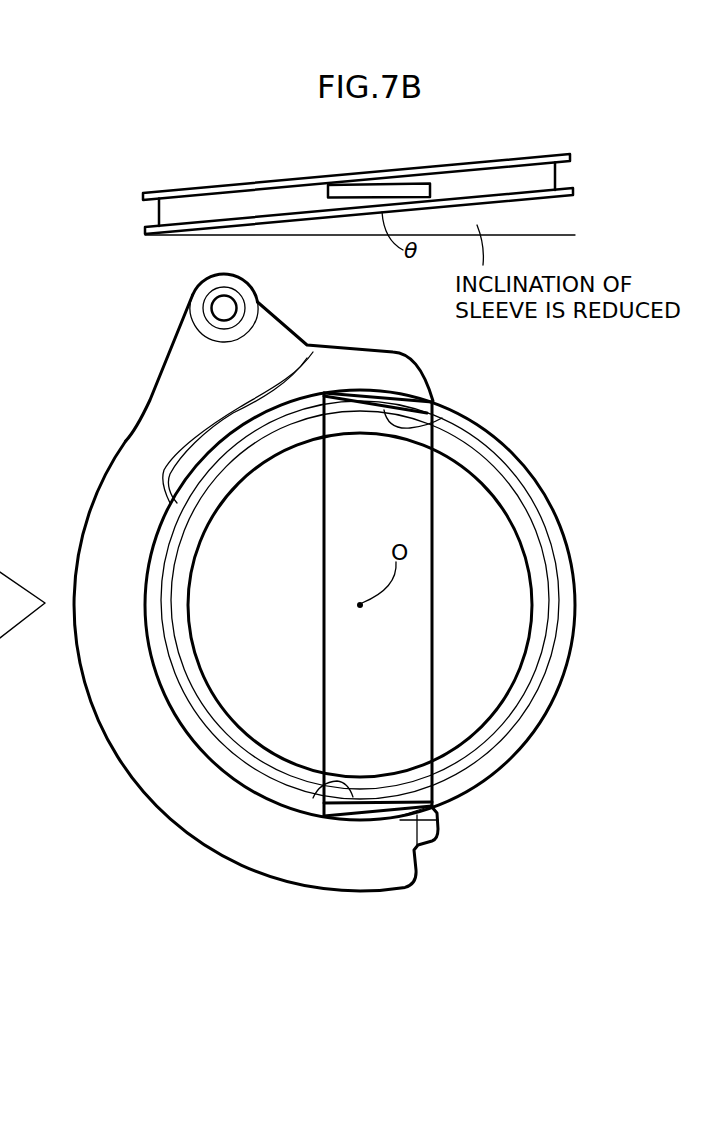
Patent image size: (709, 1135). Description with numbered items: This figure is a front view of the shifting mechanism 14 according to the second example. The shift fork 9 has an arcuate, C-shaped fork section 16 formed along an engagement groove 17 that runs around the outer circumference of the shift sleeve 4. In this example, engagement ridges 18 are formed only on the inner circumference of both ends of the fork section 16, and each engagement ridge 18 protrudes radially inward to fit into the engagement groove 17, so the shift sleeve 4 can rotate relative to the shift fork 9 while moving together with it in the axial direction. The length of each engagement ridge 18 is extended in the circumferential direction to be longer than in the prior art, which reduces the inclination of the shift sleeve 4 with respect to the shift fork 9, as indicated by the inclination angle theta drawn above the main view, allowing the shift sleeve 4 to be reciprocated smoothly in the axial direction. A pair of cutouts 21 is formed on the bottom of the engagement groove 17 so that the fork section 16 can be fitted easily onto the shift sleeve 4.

The shift sleeve 4 is at (547, 489).
The shift fork 9 is at (135, 405).
The shifting mechanism 14 is at (113, 305).
The fork section 16 is at (367, 365).
The engagement groove 17 is at (522, 180).
The engagement ridge 18 is at (393, 190).
The cutout 21 is at (442, 418).